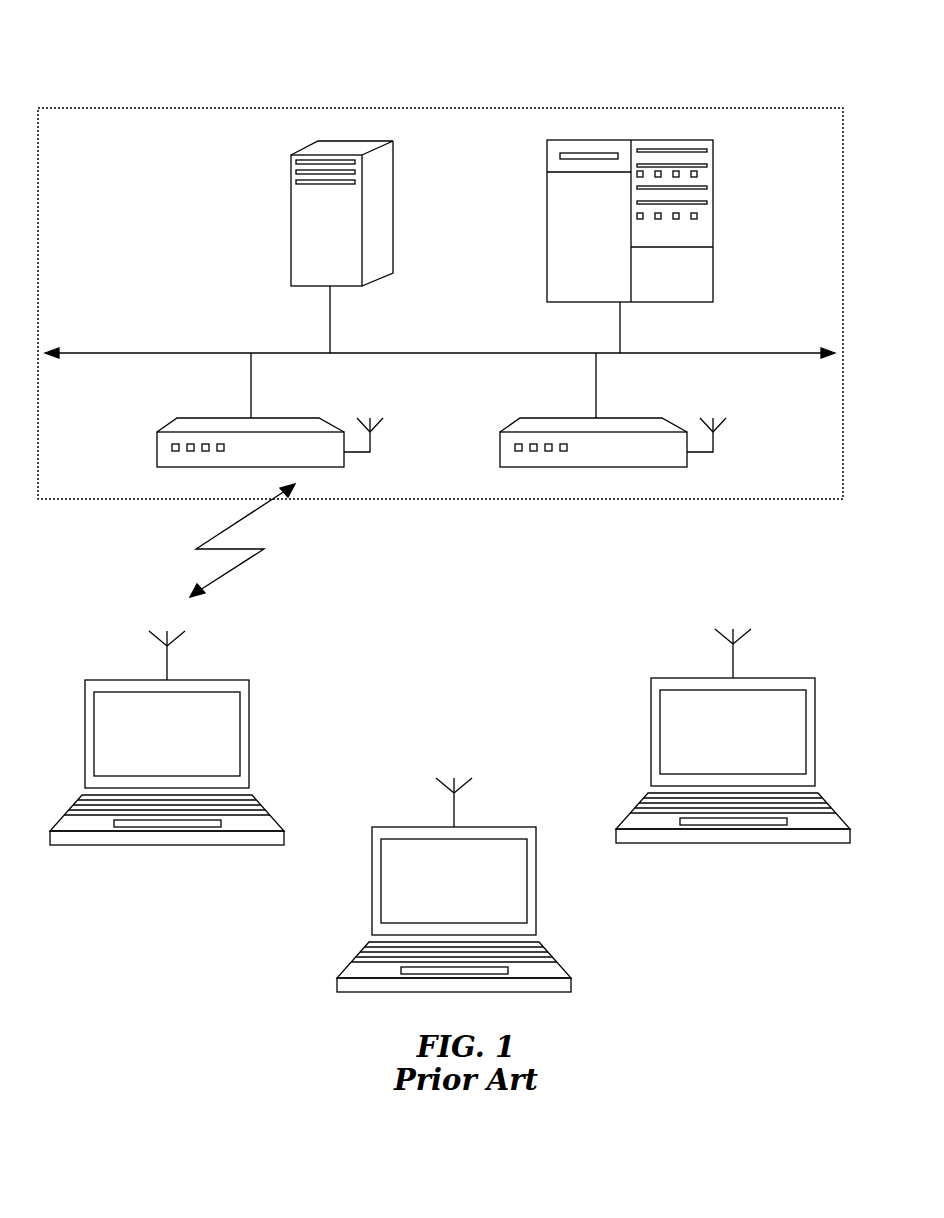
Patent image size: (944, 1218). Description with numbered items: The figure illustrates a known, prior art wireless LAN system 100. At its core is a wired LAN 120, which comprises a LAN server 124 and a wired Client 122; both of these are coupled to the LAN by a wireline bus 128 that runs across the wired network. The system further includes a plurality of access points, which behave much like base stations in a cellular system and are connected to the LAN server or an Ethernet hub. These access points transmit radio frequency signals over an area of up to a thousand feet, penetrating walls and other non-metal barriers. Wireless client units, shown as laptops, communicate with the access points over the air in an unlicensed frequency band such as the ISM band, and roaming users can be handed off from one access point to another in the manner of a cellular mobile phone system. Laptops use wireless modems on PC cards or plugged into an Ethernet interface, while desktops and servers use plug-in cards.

The wireless LAN system 100 is at (745, 28).
The wired LAN 120 is at (127, 108).
The wired Client 122 is at (290, 202).
The LAN server 124 is at (546, 222).
The wireline bus 128 is at (172, 352).